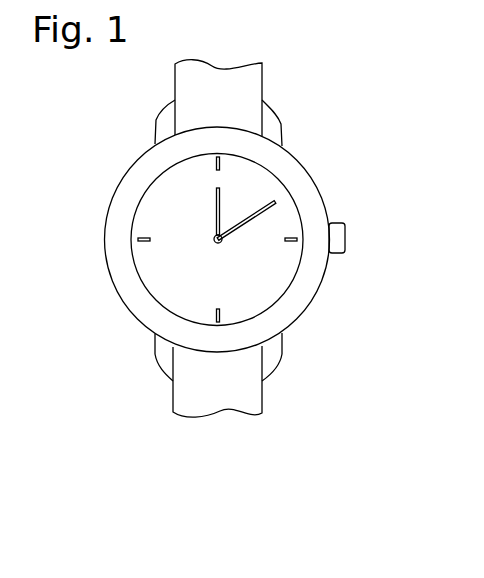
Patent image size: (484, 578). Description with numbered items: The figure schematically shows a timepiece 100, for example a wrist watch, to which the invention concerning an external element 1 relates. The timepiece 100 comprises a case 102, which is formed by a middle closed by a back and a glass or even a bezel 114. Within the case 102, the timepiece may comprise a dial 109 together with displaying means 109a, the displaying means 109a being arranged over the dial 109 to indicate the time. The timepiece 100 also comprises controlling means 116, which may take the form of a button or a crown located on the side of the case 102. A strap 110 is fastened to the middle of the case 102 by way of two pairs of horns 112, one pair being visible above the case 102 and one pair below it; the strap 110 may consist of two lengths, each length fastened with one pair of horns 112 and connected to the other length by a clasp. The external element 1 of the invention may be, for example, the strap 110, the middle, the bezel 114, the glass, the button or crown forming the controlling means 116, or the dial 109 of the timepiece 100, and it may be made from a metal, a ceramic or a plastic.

The timepiece 100 is at (373, 133).
The case 102 is at (323, 192).
The strap 110 is at (245, 90).
The horns 112 is at (279, 123).
The bezel 114 is at (133, 183).
The controlling means 116 is at (340, 247).
The external element 1 is at (335, 213).
The dial 109 is at (156, 271).
The displaying means 109a is at (242, 226).